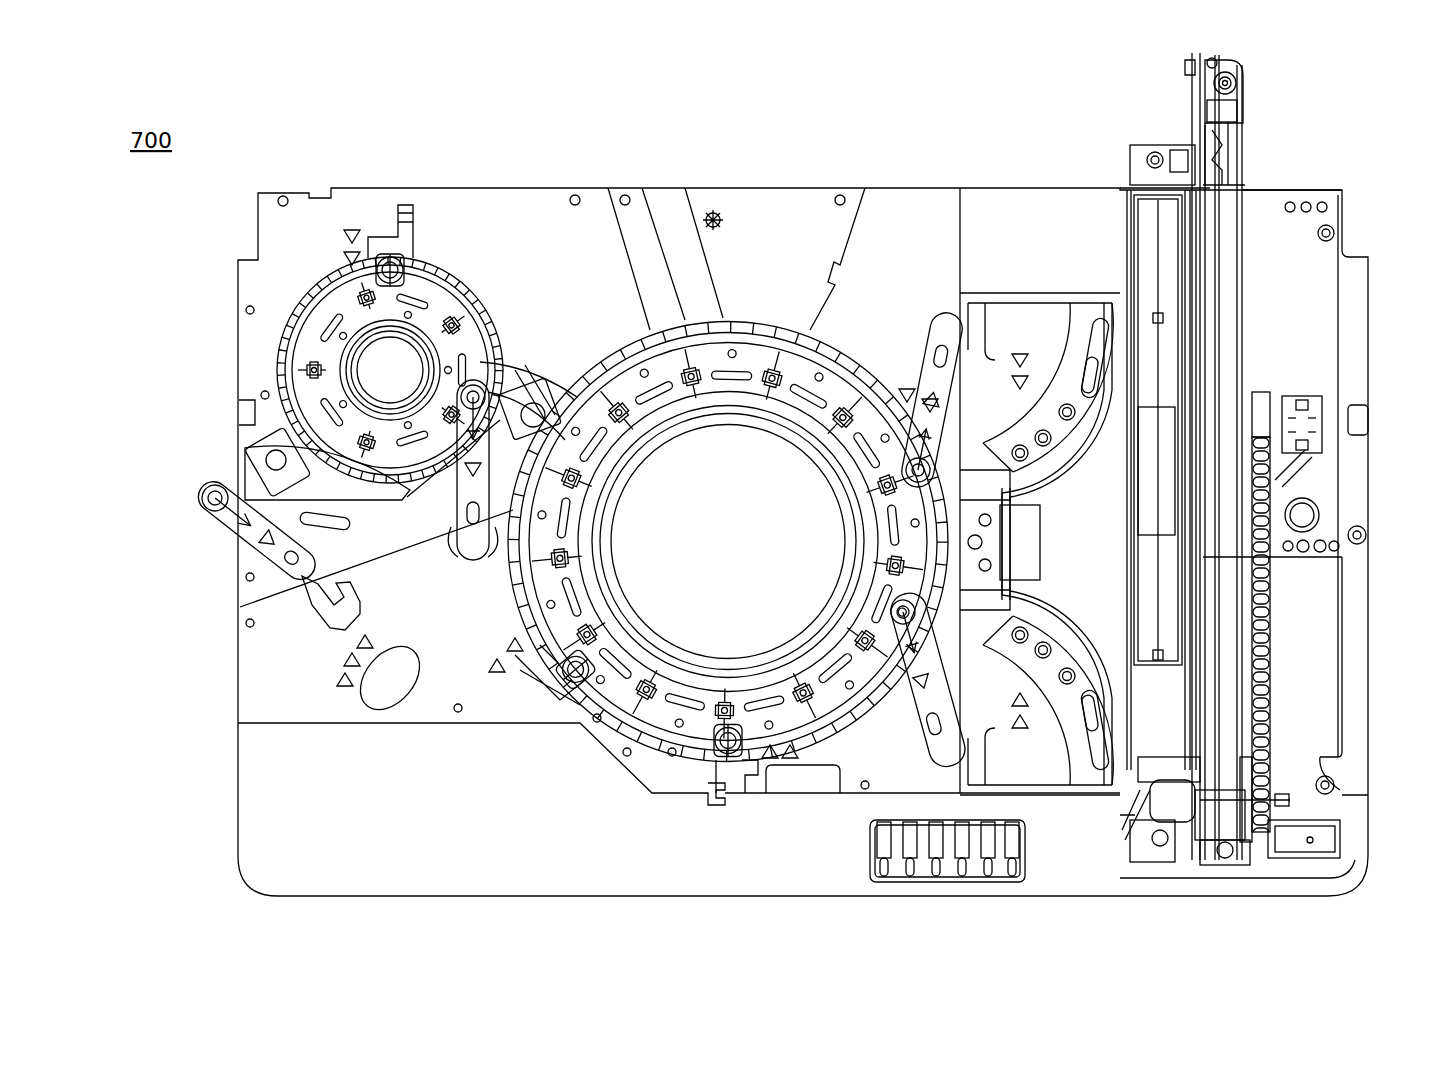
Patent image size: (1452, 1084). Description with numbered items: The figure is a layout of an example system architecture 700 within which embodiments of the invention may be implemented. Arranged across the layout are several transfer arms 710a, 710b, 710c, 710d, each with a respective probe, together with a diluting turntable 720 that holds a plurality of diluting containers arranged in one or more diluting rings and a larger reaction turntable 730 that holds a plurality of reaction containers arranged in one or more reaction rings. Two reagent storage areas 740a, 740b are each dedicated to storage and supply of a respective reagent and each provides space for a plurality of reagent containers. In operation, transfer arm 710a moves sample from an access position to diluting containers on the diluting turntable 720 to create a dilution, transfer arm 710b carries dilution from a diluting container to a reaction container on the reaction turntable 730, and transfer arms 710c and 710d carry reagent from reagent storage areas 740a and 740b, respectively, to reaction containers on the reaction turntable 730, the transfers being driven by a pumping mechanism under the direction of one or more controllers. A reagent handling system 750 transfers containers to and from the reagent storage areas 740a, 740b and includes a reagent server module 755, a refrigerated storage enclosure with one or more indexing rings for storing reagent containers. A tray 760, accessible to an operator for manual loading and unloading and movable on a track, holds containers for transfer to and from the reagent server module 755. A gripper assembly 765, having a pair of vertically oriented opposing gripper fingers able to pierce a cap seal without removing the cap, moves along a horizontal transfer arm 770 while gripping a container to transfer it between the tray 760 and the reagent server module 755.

The system architecture 700 is at (803, 570).
The transfer arm 710a is at (212, 490).
The transfer arm 710b is at (553, 383).
The transfer arm 710c is at (940, 318).
The transfer arm 710d is at (940, 750).
The diluting turntable 720 is at (440, 285).
The reaction turntable 730 is at (808, 720).
The reagent storage area 740a is at (1052, 395).
The reagent storage area 740b is at (1085, 683).
The reagent handling system 750 is at (1312, 182).
The reagent server module 755 is at (1325, 295).
The tray 760 is at (950, 882).
The gripper assembly 765 is at (1180, 850).
The horizontal transfer arm 770 is at (1203, 628).